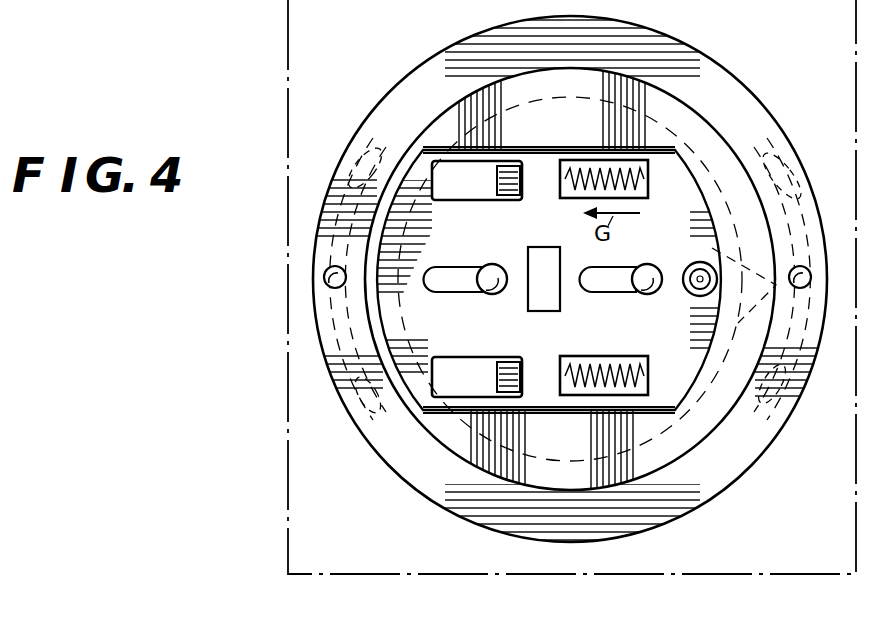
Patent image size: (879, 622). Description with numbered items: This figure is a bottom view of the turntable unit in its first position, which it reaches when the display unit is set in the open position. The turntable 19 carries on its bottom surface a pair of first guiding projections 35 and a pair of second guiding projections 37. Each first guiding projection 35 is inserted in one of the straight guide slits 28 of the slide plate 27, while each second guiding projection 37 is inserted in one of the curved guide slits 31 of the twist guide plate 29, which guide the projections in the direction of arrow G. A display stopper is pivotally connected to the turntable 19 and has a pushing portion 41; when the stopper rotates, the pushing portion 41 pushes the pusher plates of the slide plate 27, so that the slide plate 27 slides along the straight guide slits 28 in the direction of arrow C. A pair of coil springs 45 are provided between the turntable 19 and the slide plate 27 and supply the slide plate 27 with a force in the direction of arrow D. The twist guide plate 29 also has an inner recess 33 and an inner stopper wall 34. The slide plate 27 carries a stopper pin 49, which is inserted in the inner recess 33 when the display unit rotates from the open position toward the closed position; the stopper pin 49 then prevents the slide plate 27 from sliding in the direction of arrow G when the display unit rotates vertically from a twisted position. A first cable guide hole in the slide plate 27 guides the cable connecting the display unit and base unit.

The turntable 19 is at (418, 78).
The slide plate 27 is at (679, 398).
The straight guide slits 28 is at (446, 282).
The twist guide plate 29 is at (580, 573).
The curved guide slits 31 is at (791, 170).
The inner recess 33 is at (718, 252).
The inner stopper wall 34 is at (562, 100).
The first guiding projections 35 is at (495, 265).
The second guiding projections 37 is at (333, 280).
The pushing portion 41 is at (501, 198).
The coil springs 45 is at (640, 190).
The stopper pin 49 is at (688, 268).